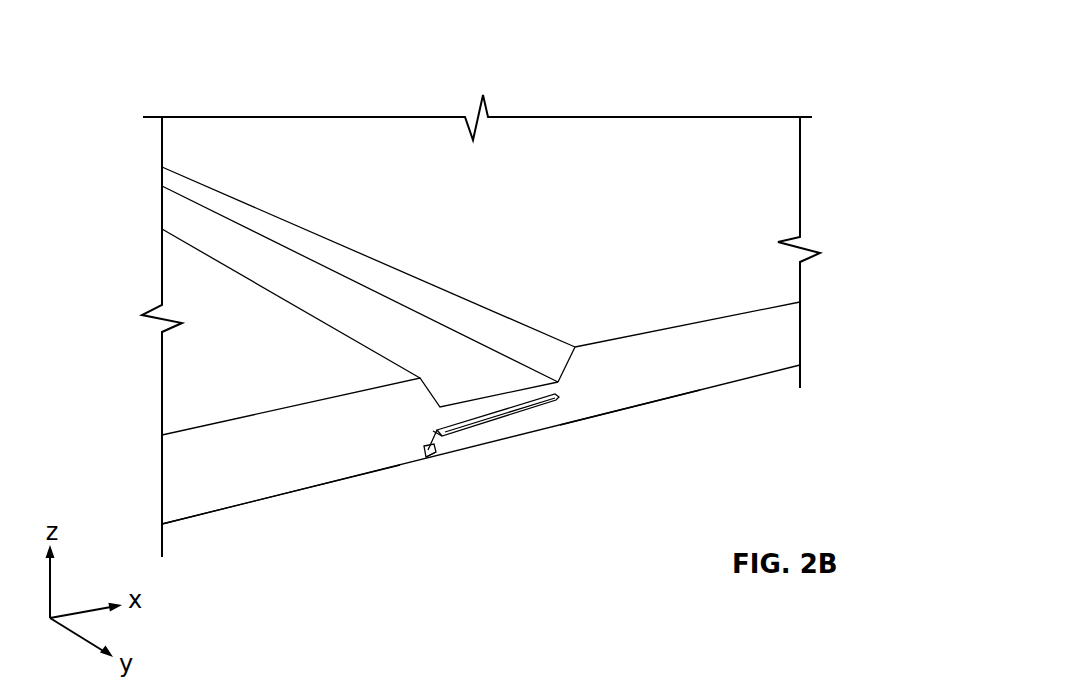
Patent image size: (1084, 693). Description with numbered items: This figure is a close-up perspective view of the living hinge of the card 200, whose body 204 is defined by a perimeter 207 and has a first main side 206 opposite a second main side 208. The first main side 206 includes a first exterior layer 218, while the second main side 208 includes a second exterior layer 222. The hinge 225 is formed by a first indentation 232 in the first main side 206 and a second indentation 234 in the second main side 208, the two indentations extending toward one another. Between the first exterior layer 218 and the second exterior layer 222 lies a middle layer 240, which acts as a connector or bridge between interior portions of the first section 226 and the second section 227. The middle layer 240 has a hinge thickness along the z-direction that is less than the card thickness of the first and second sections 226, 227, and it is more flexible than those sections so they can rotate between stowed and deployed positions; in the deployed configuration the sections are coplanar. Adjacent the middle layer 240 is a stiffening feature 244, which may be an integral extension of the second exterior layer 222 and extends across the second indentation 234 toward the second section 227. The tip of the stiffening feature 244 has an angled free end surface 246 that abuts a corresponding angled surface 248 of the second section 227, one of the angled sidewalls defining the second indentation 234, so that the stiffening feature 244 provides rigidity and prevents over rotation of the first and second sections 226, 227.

The card 200 is at (150, 98).
The body 204 is at (793, 200).
The first main side 206 is at (787, 298).
The perimeter 207 is at (225, 492).
The second main side 208 is at (716, 386).
The first exterior layer 218 is at (531, 206).
The second exterior layer 222 is at (613, 412).
The hinge 225 is at (170, 217).
The first section 226 is at (576, 135).
The second section 227 is at (172, 401).
The first indentation 232 is at (342, 268).
The second indentation 234 is at (423, 481).
The middle layer 240 is at (445, 340).
The stiffening feature 244 is at (508, 430).
The angled free end surface 246 is at (432, 452).
The angled surface 248 is at (424, 452).